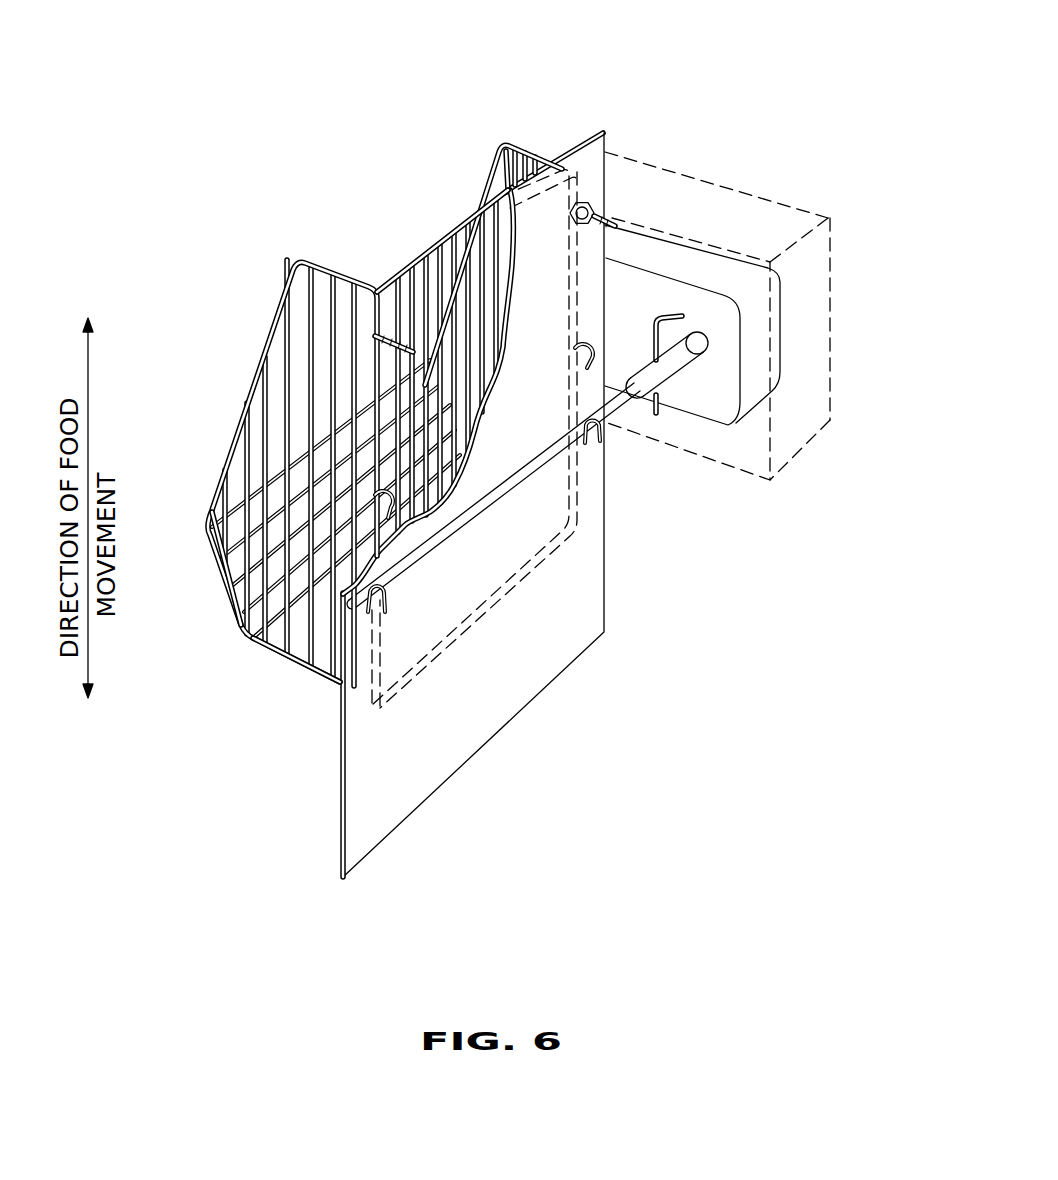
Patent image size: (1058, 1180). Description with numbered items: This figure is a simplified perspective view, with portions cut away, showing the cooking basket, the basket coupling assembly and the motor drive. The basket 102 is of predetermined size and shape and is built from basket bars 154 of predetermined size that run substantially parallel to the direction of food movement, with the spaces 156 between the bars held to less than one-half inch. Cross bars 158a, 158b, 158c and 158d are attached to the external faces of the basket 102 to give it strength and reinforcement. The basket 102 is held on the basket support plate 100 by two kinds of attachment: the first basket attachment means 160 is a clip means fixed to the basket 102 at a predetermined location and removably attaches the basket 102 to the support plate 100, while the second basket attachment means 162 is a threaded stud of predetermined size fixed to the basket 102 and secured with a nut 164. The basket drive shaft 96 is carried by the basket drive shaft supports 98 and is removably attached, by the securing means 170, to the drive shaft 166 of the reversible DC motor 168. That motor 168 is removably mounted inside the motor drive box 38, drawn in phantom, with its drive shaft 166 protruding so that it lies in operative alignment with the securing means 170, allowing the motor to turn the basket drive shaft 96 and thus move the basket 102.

The motor drive box 38 is at (793, 222).
The basket drive shaft 96 is at (620, 415).
The basket drive shaft supports 98 is at (600, 443).
The basket support plate 100 is at (601, 132).
The basket 102 is at (507, 138).
The basket bars 154 is at (417, 278).
The spaces 156 is at (420, 294).
The cross bar 158a is at (330, 468).
The cross bar 158b is at (282, 608).
The cross bar 158c is at (272, 662).
The cross bar 158d is at (493, 600).
The first basket attachment means 160 is at (578, 360).
The second basket attachment means 162 is at (375, 338).
The nut 164 is at (588, 205).
The drive shaft 166 is at (694, 350).
The reversible DC motor 168 is at (762, 338).
The securing means 170 is at (664, 320).